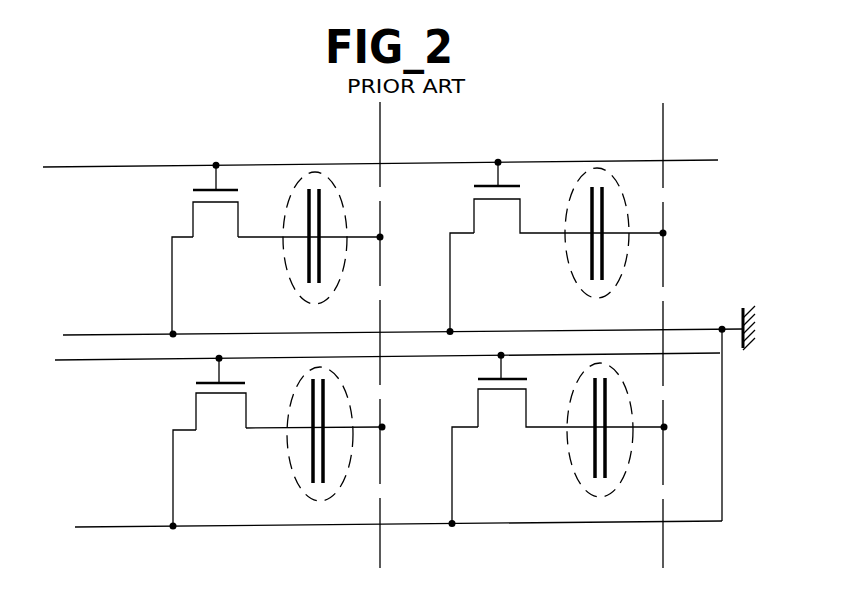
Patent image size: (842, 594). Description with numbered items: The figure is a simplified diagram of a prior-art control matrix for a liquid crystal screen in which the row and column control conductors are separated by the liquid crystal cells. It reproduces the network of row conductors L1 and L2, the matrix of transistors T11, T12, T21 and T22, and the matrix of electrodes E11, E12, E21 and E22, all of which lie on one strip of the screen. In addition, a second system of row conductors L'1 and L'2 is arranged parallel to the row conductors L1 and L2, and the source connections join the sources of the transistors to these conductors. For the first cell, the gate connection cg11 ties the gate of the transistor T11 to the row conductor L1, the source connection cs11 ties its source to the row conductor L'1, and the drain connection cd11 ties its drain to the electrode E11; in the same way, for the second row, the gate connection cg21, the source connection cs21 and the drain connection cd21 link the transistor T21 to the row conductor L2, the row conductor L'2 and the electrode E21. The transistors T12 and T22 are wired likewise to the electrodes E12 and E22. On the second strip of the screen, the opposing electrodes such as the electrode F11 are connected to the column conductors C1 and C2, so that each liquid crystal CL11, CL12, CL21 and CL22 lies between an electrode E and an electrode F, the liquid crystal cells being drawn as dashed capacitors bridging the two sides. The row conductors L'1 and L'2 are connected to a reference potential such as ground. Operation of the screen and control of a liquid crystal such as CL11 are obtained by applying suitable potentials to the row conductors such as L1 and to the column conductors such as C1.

The row conductor L1 is at (377, 154).
The row conductor L'1 is at (395, 323).
The row conductor L2 is at (378, 372).
The row conductor L'2 is at (384, 514).
The column conductor C1 is at (380, 548).
The column conductor C2 is at (664, 542).
The transistor T11 is at (238, 189).
The transistor T12 is at (480, 184).
The transistor T21 is at (242, 382).
The transistor T22 is at (480, 375).
The gate connection cg11 is at (214, 180).
The source connection cs11 is at (172, 262).
The drain connection cd11 is at (238, 218).
The gate connection cg21 is at (217, 373).
The source connection cs21 is at (196, 428).
The drain connection cd21 is at (246, 412).
The liquid crystal CL11 is at (306, 223).
The liquid crystal CL12 is at (584, 208).
The liquid crystal CL21 is at (294, 443).
The liquid crystal CL22 is at (572, 433).
The electrode E11 is at (308, 254).
The electrode F11 is at (321, 276).
The electrode E12 is at (591, 253).
The electrode E21 is at (312, 448).
The electrode E22 is at (594, 440).